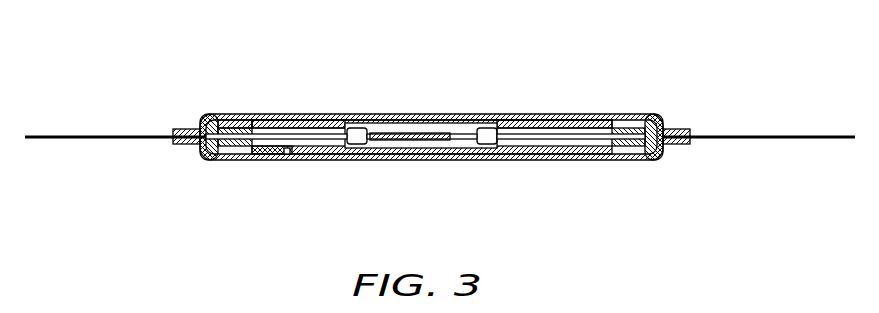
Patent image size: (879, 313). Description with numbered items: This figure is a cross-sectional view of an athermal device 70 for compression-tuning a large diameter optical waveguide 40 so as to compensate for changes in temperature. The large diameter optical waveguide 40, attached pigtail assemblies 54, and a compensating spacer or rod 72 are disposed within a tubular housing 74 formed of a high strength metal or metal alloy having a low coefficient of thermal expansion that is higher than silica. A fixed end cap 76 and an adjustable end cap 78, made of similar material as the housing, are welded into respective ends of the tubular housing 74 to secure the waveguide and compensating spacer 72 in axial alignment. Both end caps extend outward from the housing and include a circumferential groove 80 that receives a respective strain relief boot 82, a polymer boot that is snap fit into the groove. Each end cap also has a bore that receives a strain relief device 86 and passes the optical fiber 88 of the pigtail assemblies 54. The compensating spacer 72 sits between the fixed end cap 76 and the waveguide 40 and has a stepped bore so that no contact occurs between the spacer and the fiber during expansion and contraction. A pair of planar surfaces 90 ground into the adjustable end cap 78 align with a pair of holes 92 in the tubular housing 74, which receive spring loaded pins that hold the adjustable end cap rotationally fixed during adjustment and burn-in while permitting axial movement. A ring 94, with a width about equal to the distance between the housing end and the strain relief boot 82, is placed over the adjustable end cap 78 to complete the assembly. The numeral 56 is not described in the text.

The large diameter optical waveguide 40 is at (423, 126).
The pigtail assembly 54 is at (558, 150).
The reed contact 56 is at (450, 142).
The athermal device 70 is at (576, 97).
The compensating spacer 72 is at (515, 114).
The tubular housing 74 is at (358, 114).
The fixed end cap 76 is at (629, 115).
The adjustable end cap 78 is at (283, 114).
The circumferential groove 80 is at (222, 160).
The strain relief boot 82 is at (210, 118).
The strain relief device 86 is at (238, 162).
The optical fiber 88 is at (35, 134).
The planar surface 90 is at (288, 160).
The hole 92 is at (272, 160).
The ring 94 is at (240, 114).